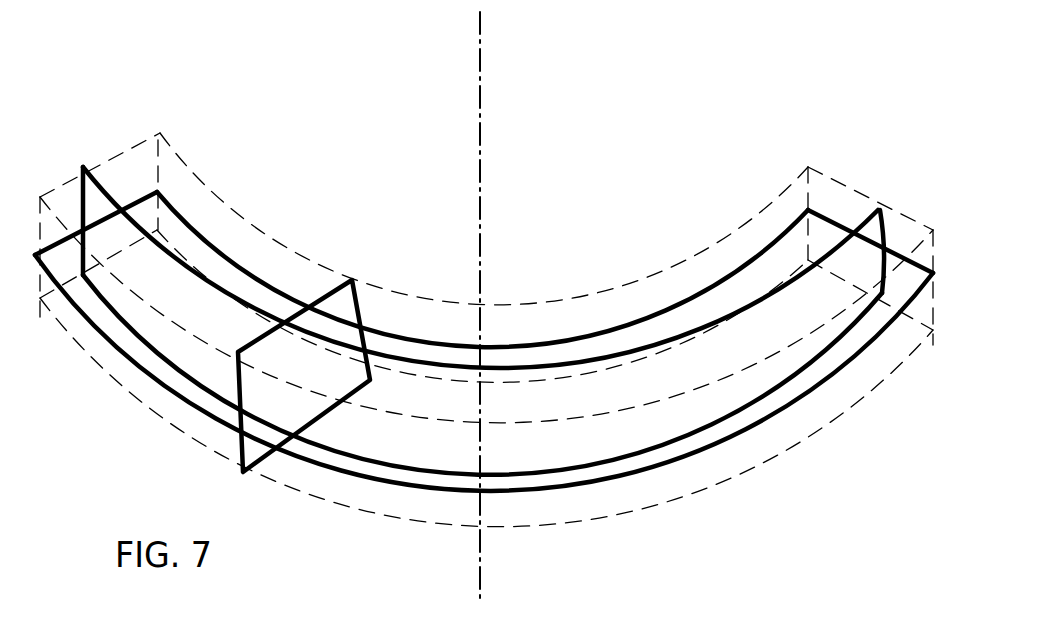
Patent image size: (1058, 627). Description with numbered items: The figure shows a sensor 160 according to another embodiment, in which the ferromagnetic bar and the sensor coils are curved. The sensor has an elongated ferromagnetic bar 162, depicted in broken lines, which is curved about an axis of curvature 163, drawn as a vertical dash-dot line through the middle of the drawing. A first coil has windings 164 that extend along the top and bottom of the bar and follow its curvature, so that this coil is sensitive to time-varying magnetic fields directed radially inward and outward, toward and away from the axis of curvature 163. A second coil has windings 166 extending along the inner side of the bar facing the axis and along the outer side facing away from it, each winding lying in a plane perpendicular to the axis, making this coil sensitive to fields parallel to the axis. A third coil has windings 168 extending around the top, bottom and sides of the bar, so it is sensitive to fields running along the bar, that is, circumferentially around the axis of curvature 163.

The sensor 160 is at (475, 349).
The elongated ferromagnetic bar 162 is at (742, 237).
The axis of curvature 163 is at (479, 132).
The windings of first coil 164 is at (666, 340).
The windings of second coil 166 is at (130, 362).
The windings of third coil 168 is at (282, 322).